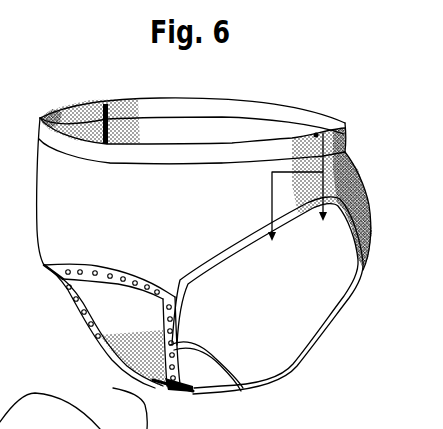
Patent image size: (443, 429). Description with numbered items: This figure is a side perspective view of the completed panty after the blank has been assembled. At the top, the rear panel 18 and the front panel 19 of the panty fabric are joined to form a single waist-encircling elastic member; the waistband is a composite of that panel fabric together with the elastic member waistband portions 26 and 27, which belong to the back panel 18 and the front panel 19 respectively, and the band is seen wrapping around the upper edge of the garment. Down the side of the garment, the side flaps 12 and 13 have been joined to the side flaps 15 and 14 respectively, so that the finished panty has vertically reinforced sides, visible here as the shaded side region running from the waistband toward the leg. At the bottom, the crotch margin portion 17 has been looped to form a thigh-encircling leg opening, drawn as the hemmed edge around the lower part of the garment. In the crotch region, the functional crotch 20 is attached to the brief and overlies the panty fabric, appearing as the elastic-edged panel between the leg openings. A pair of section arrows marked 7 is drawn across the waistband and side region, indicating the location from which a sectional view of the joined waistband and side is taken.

The section line 7 is at (298, 200).
The side flap 12 is at (118, 128).
The side flap 13 is at (338, 180).
The side flap 14 is at (293, 162).
The side flap 15 is at (85, 108).
The crotch portion edge 17 is at (227, 393).
The rear panel 18 is at (198, 124).
The front panel 19 is at (121, 195).
The functional crotch 20 is at (162, 388).
The elastic member waistband portion 26 is at (280, 110).
The elastic member waistband portion 27 is at (187, 157).